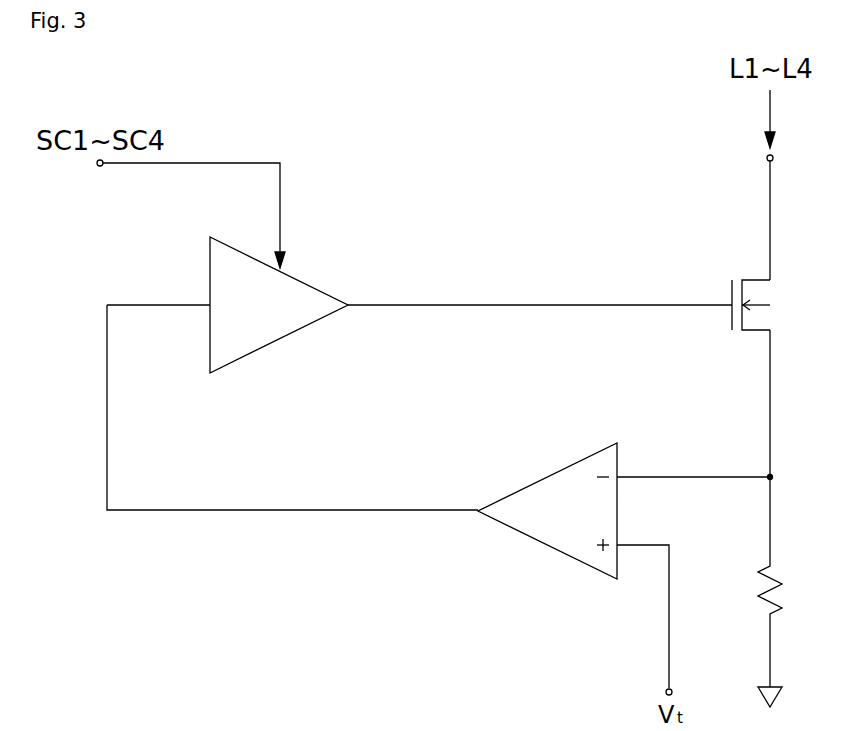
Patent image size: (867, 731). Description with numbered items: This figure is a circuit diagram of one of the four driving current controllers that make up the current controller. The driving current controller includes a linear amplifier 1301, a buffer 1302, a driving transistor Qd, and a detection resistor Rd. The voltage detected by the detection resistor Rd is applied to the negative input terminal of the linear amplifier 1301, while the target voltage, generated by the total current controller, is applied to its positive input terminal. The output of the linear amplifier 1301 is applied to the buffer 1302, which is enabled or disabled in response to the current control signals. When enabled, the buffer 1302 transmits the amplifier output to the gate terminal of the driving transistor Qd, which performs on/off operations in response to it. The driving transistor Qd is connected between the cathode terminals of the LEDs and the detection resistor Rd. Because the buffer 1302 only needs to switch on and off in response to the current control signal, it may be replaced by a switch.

The linear amplifier 1301 is at (548, 547).
The buffer 1302 is at (280, 342).
The driving transistor Qd is at (775, 305).
The detection resistor Rd is at (791, 590).